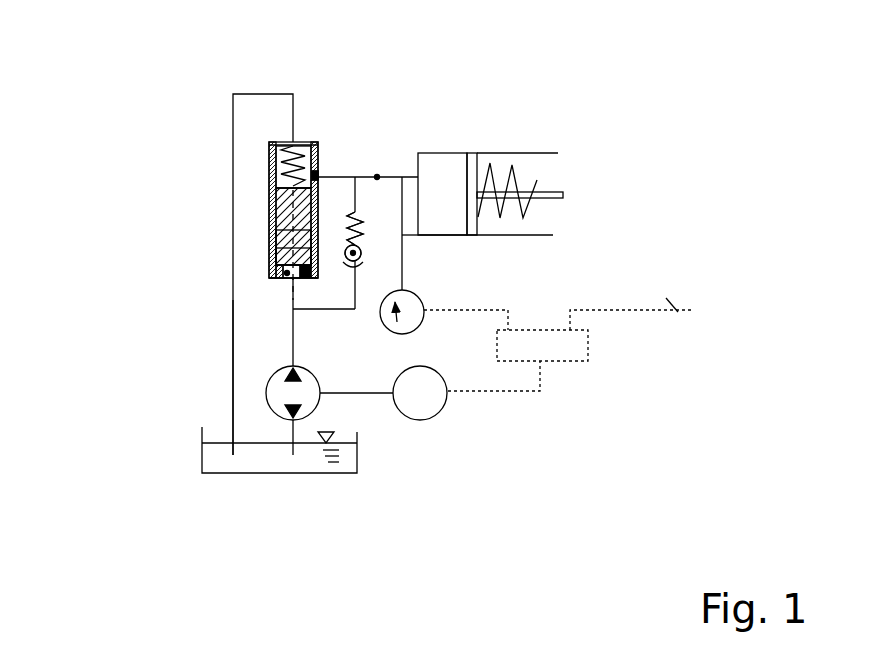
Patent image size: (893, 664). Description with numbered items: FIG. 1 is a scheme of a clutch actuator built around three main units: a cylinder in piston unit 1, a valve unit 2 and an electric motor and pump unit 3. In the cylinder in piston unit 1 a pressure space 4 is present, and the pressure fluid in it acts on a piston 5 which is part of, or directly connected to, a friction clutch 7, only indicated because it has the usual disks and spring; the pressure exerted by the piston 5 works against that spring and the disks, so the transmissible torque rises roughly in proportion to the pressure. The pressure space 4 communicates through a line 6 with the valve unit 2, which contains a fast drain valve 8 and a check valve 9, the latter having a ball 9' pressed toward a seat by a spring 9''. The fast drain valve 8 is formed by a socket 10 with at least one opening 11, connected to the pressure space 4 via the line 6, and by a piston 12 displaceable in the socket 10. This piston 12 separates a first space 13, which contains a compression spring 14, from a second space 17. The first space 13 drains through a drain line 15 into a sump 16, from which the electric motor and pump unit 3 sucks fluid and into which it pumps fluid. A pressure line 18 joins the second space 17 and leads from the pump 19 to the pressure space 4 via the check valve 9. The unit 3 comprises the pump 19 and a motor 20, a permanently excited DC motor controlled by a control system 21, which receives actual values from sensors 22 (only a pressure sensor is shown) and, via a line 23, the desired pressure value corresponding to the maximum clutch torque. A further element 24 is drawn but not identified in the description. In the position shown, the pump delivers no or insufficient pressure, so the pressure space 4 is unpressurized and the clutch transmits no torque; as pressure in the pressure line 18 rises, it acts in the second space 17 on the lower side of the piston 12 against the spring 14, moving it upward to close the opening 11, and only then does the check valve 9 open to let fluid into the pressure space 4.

The cylinder in piston unit 1 is at (485, 146).
The valve unit 2 is at (320, 134).
The electric motor and pump unit 3 is at (226, 397).
The pressure space 4 is at (433, 172).
The piston 5 is at (475, 180).
The line 6 is at (377, 177).
The friction clutch 7 is at (587, 114).
The fast drain valve 8 is at (260, 203).
The check valve 9 is at (542, 243).
The ball 9' is at (571, 211).
The spring 9'' is at (574, 184).
The socket 10 is at (271, 243).
The opening 11 is at (316, 176).
The piston 12 is at (283, 255).
The first space 13 is at (282, 162).
The compression spring 14 is at (301, 152).
The drain line 15 is at (253, 94).
The sump 16 is at (241, 457).
The second space 17 is at (272, 278).
The pressure line 18 is at (293, 333).
The pump 19 is at (288, 395).
The motor 20 is at (420, 405).
The control system 21 is at (532, 343).
The sensors 22 is at (397, 322).
The line 23 is at (678, 312).
The stop 24 is at (318, 278).